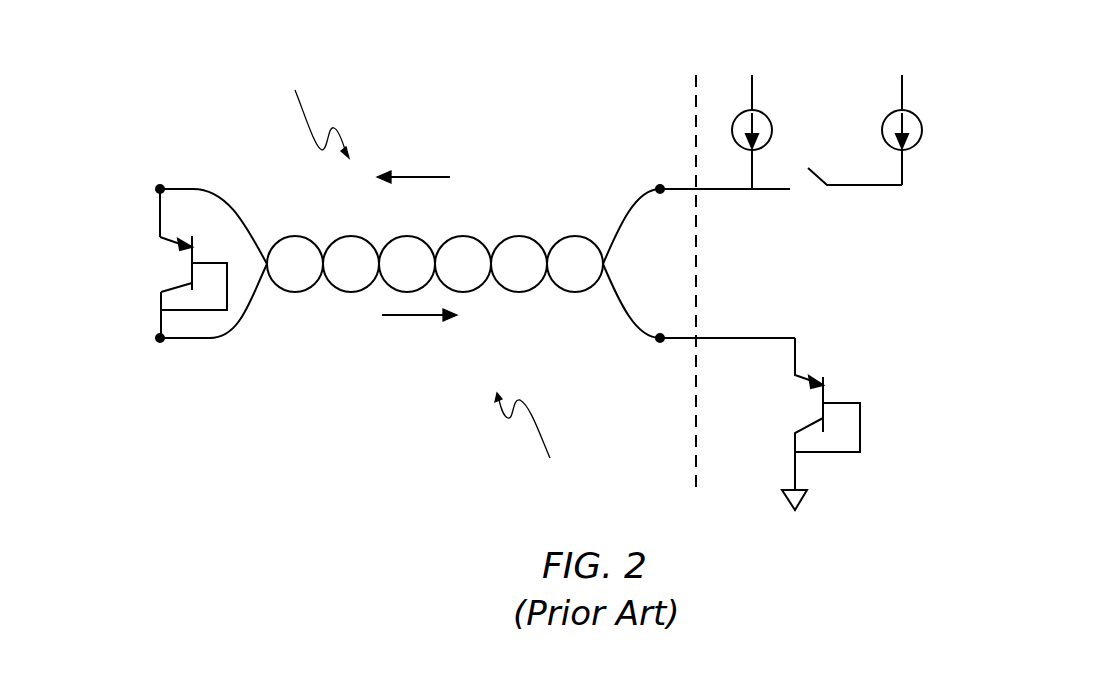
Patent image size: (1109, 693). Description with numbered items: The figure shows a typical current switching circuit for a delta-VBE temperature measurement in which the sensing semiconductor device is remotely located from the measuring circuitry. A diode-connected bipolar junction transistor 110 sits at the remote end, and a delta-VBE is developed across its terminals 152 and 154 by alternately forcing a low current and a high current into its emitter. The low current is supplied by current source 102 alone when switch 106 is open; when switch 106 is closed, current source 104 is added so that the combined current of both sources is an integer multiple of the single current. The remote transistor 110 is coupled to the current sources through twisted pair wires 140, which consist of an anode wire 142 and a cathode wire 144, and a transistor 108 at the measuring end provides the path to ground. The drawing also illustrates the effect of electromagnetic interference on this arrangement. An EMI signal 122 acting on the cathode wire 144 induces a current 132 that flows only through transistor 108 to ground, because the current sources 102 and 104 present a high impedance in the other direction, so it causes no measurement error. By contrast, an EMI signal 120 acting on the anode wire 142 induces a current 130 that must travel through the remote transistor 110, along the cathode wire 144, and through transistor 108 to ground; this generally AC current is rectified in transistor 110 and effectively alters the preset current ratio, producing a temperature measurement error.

The current source 102 is at (765, 114).
The current source 104 is at (914, 114).
The switch 106 is at (817, 178).
The transistor 108 is at (826, 385).
The diode-connected transistor 110 is at (194, 247).
The EMI signal 120 is at (305, 113).
The EMI signal 122 is at (536, 446).
The induced current 130 is at (412, 163).
The induced current 132 is at (418, 331).
The twisted pair wires 140 is at (310, 236).
The anode wire 142 is at (660, 189).
The cathode wire 144 is at (660, 338).
The terminal 152 is at (160, 189).
The terminal 154 is at (160, 338).